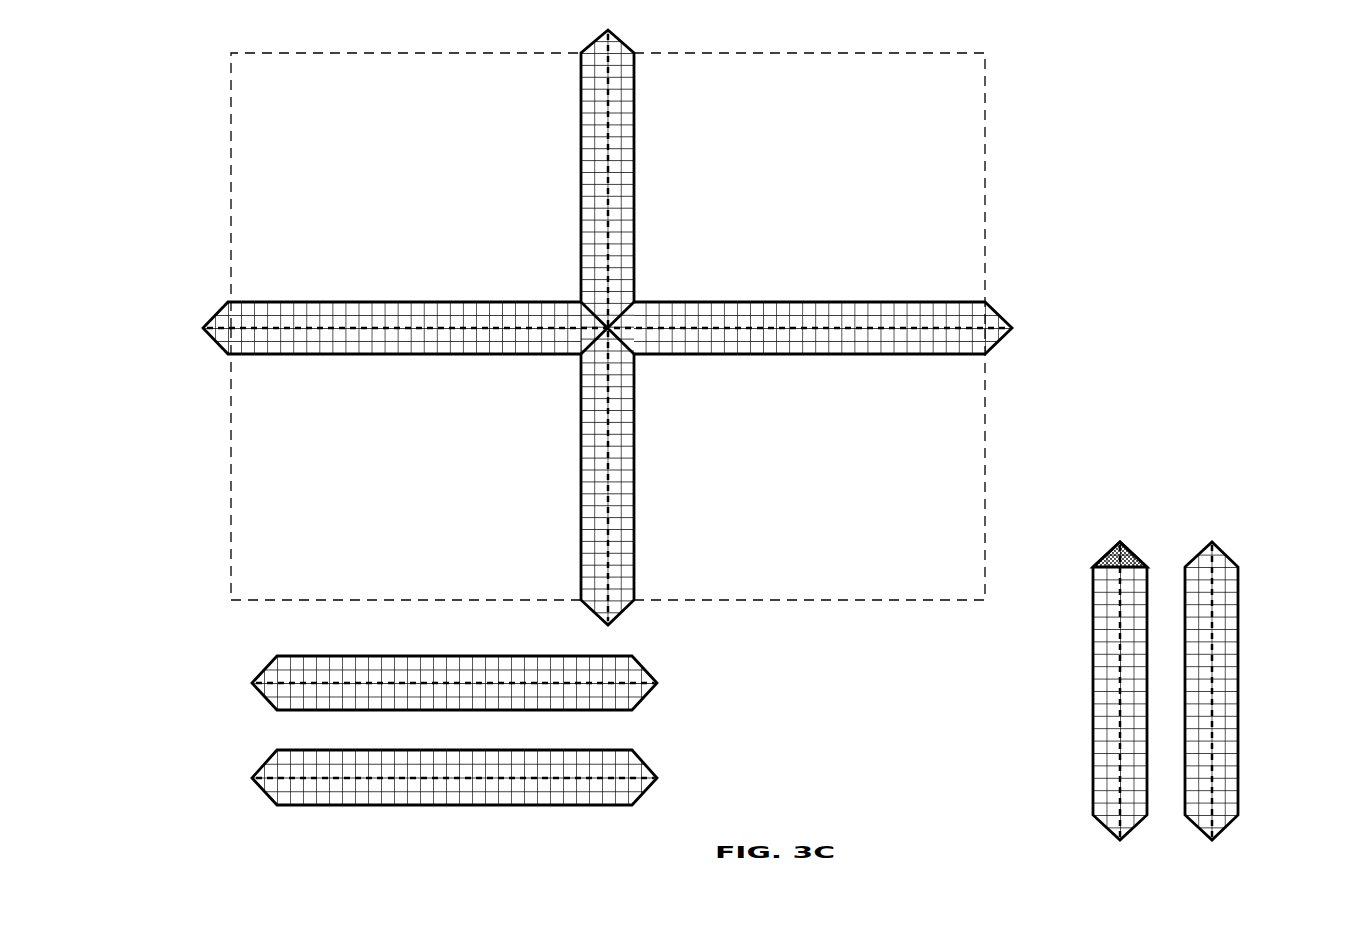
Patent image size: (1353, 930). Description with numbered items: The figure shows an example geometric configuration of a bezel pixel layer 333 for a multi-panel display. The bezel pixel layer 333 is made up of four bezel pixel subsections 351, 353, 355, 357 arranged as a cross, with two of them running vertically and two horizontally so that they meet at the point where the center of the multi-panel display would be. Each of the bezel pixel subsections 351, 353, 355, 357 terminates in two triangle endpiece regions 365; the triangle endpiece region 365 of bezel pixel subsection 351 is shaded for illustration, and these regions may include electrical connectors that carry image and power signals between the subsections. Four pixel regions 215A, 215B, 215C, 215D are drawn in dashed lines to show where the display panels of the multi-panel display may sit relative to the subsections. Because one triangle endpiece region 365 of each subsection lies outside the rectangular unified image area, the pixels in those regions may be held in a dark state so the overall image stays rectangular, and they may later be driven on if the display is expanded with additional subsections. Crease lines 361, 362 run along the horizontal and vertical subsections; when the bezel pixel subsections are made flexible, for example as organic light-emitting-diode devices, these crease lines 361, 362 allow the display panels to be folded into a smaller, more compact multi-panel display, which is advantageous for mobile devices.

The pixel region 215A is at (301, 102).
The pixel region 215B is at (950, 98).
The pixel region 215C is at (283, 581).
The pixel region 215D is at (975, 583).
The bezel pixel layer 333 is at (773, 435).
The bezel pixel subsection 351 is at (634, 178).
The bezel pixel subsection 353 is at (582, 520).
The bezel pixel subsection 355 is at (460, 302).
The bezel pixel subsection 357 is at (918, 302).
The crease line 361 is at (700, 330).
The crease line 362 is at (608, 440).
The triangle endpiece region 365 is at (1116, 543).